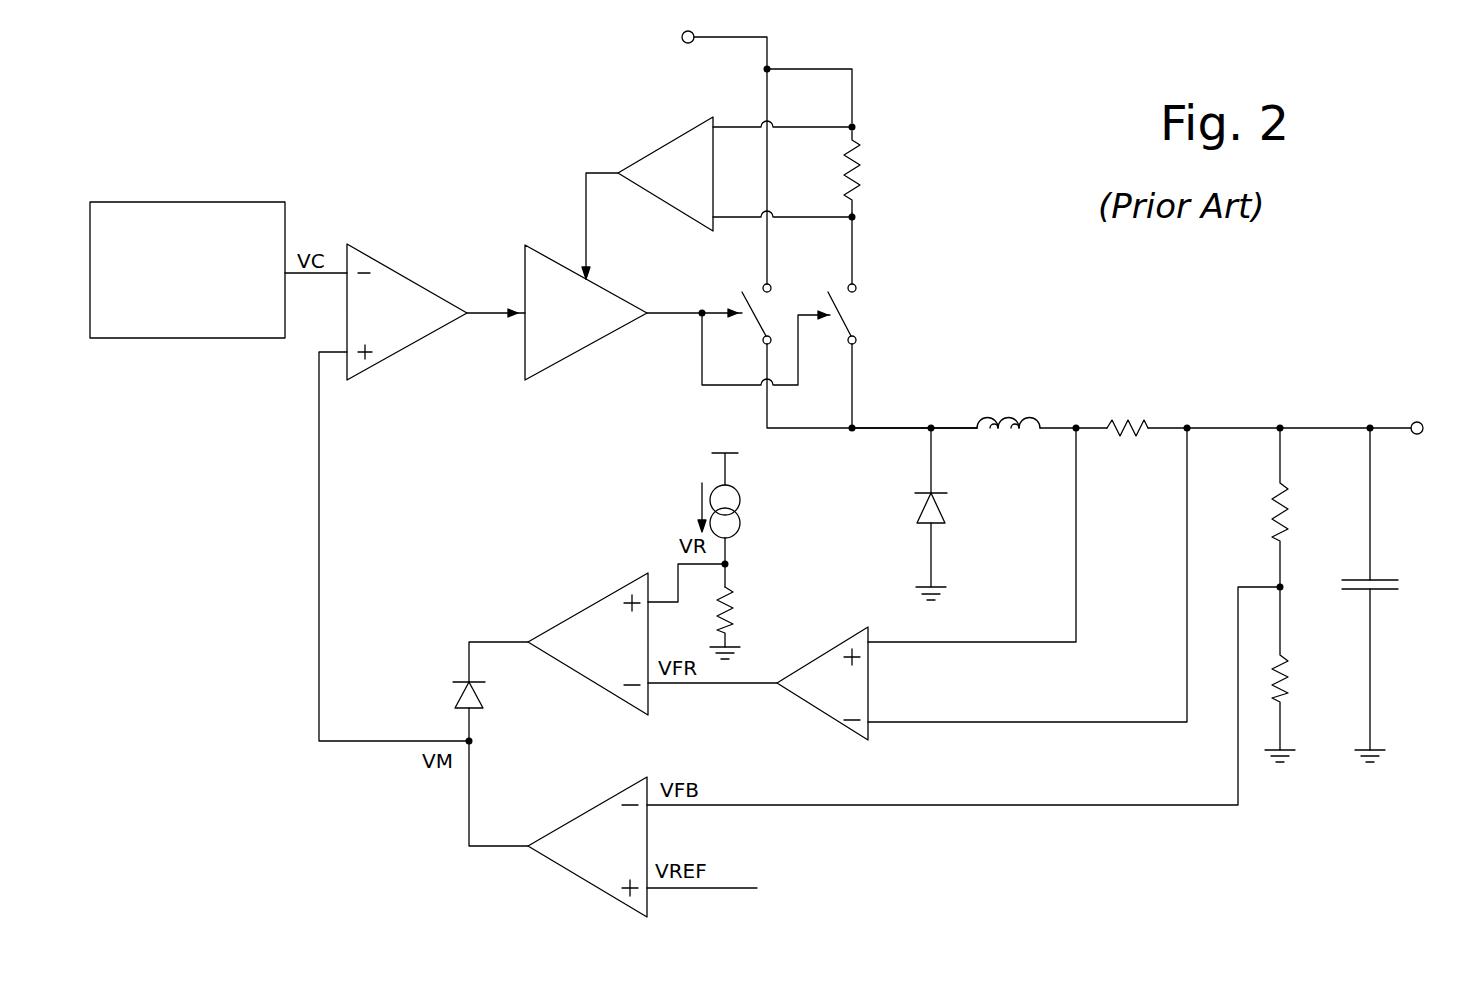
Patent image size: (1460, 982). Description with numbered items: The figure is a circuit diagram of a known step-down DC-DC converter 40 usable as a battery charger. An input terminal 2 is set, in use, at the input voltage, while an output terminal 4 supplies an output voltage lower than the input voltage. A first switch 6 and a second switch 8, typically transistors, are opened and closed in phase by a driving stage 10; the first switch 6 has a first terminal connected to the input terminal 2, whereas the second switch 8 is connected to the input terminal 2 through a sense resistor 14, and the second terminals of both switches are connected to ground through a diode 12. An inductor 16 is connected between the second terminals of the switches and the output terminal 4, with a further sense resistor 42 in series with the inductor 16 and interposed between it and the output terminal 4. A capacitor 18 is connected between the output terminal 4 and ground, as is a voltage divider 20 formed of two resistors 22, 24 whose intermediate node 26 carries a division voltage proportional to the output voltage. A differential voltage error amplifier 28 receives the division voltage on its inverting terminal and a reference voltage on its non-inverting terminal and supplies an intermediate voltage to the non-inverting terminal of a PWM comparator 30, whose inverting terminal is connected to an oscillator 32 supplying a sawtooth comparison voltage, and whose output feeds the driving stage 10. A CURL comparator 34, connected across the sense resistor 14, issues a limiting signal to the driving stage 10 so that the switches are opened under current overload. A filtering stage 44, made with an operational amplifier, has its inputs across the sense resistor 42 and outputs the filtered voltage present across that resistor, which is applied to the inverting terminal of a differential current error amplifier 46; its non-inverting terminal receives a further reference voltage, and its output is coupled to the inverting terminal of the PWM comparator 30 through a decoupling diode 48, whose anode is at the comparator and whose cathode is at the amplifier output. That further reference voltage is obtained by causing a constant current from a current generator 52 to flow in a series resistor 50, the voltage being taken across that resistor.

The input terminal 2 is at (693, 43).
The output terminal 4 is at (1416, 422).
The first switch 6 is at (773, 312).
The second switch 8 is at (858, 312).
The driving stage 10 is at (551, 357).
The diode 12 is at (915, 518).
The sense resistor 14 is at (862, 182).
The inductor 16 is at (995, 420).
The capacitor 18 is at (1384, 584).
The voltage divider 20 is at (1279, 595).
The resistor 22 is at (1270, 506).
The resistor 24 is at (1284, 688).
The intermediate node 26 is at (1286, 592).
The differential voltage error amplifier 28 is at (580, 820).
The PWM comparator 30 is at (400, 283).
The oscillator 32 is at (163, 212).
The CURL comparator 34 is at (656, 160).
The step-down DC-DC converter 40 is at (1205, 348).
The sense resistor 42 is at (1117, 425).
The filtering stage 44 is at (810, 702).
The differential current error amplifier 46 is at (554, 636).
The decoupling diode 48 is at (455, 698).
The resistor 50 is at (735, 612).
The current generator 52 is at (740, 522).